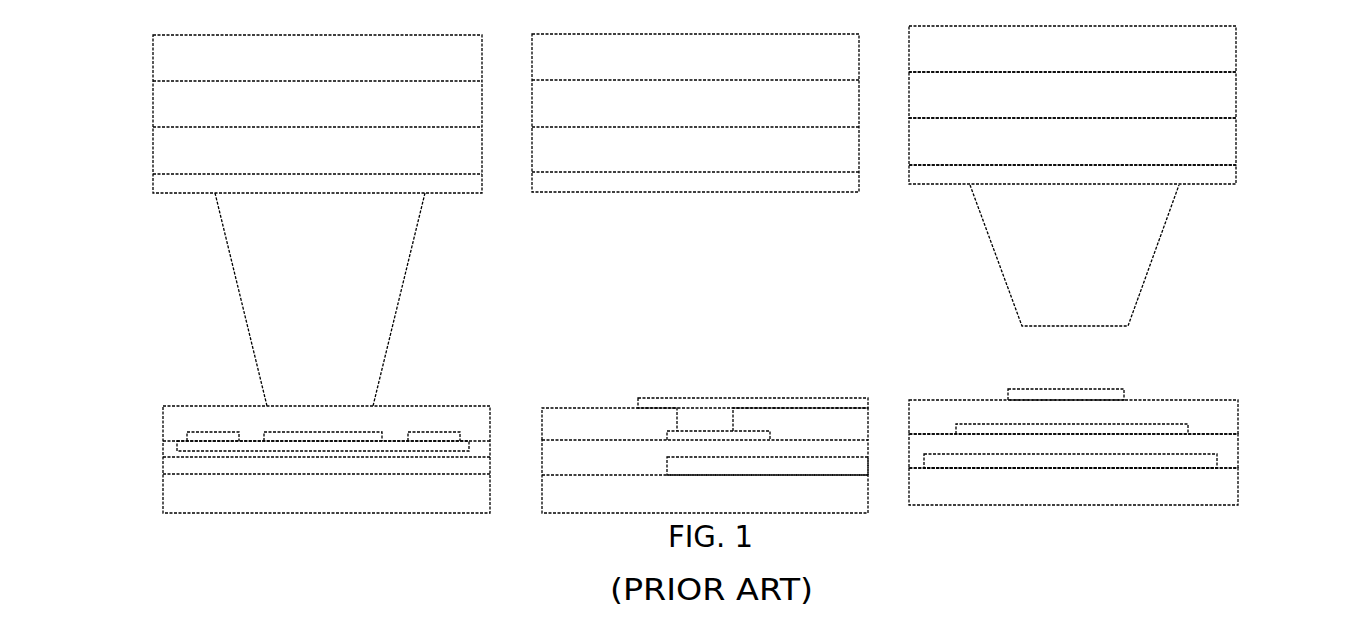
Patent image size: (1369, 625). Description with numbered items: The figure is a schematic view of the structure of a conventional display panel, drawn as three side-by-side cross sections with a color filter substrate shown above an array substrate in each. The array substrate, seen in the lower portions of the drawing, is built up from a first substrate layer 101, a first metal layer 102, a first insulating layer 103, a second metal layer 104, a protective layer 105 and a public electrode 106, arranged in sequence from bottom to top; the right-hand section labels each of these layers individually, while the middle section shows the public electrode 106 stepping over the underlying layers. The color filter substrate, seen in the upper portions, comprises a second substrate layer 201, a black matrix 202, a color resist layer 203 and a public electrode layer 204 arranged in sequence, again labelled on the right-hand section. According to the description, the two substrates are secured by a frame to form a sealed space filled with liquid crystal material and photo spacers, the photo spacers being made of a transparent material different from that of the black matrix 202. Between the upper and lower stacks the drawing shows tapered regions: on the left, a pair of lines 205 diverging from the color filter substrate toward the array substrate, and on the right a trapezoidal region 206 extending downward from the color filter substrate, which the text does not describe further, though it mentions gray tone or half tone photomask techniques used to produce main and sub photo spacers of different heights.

The first substrate layer 101 is at (1223, 490).
The first metal layer 102 is at (1203, 457).
The first insulating layer 103 is at (1218, 440).
The second metal layer 104 is at (1172, 425).
The protective layer 105 is at (1218, 400).
The public electrode 106 is at (1115, 397).
The second substrate layer 201 is at (1210, 52).
The black matrix 202 is at (1210, 86).
The color resist layer 203 is at (1218, 136).
The public electrode layer 204 is at (1223, 170).
The exposure light path 205 is at (392, 278).
The exposure light region 206 is at (1123, 254).